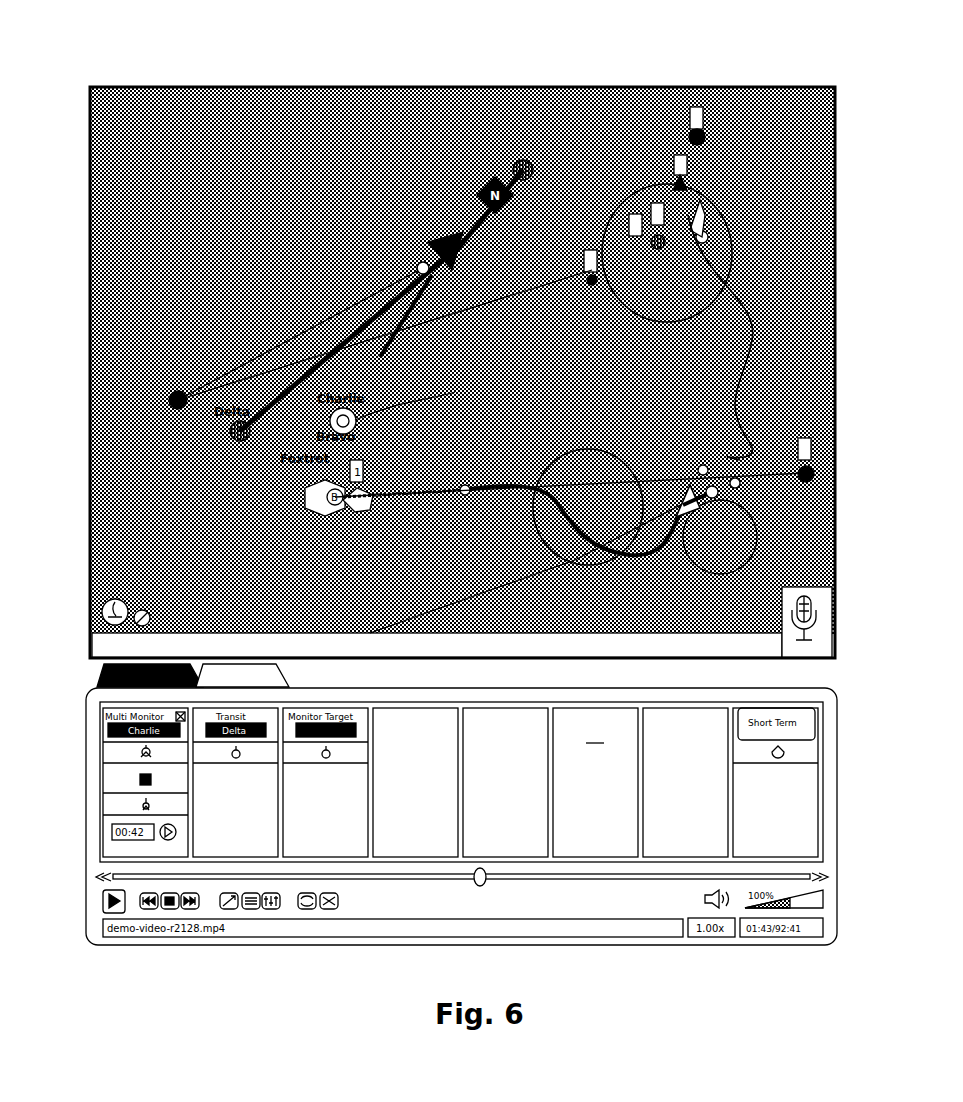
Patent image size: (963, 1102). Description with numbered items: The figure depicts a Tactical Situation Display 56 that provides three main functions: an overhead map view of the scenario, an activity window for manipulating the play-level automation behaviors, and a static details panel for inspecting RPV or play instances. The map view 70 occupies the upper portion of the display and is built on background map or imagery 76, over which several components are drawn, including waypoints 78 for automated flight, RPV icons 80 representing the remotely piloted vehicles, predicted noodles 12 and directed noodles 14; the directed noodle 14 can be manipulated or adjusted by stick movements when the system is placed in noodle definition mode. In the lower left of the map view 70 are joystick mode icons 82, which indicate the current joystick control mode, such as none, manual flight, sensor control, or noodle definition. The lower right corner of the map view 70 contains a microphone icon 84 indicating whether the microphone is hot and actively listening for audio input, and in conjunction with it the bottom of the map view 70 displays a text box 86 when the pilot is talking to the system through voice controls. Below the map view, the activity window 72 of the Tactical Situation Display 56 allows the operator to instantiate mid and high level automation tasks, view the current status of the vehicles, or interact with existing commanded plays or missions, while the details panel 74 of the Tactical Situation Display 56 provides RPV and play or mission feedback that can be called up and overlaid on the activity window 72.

The Tactical Situation Display 56 is at (629, 82).
The map view 70 is at (760, 135).
The background map or imagery 76 is at (462, 361).
The waypoints 78 is at (466, 420).
The RPV icons 80 is at (745, 326).
The joystick mode icons 82 is at (120, 594).
The microphone icon 84 is at (833, 600).
The text box 86 is at (603, 650).
The activity window 72 is at (92, 676).
The details panel 74 is at (288, 668).
The directed noodle 14 is at (545, 458).
The predicted noodle 12 is at (620, 482).